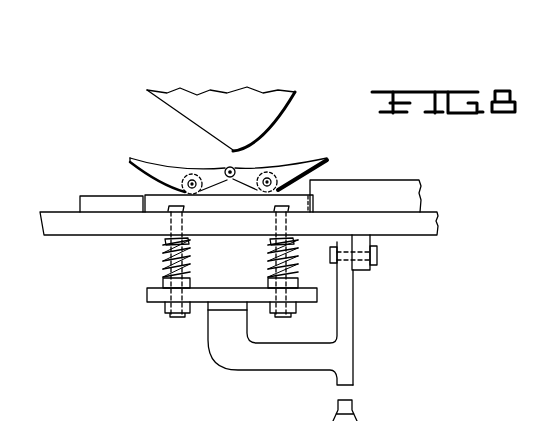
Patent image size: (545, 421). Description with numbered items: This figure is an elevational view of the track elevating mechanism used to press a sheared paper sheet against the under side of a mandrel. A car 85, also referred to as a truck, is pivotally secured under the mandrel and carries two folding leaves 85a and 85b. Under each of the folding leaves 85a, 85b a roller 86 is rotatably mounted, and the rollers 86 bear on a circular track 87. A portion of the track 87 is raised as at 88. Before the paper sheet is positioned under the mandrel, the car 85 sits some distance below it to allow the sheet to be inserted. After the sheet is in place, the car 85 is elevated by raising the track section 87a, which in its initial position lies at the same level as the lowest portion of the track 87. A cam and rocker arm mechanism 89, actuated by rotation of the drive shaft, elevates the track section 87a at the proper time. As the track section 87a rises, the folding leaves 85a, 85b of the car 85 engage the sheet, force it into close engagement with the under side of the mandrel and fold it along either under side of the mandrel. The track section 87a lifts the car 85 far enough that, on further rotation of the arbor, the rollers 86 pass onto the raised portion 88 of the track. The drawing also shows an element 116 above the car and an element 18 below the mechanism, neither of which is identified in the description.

The hopper 116 is at (272, 118).
The car 85 is at (213, 165).
The folding leaf 85a is at (290, 167).
The folding leaf 85b is at (157, 165).
The roller 86 is at (312, 182).
The circular track 87 is at (108, 205).
The track section 87a is at (165, 207).
The raised portion of the track 88 is at (383, 192).
The cam and rocker arm mechanism 89 is at (318, 358).
The shaft 18 is at (295, 410).